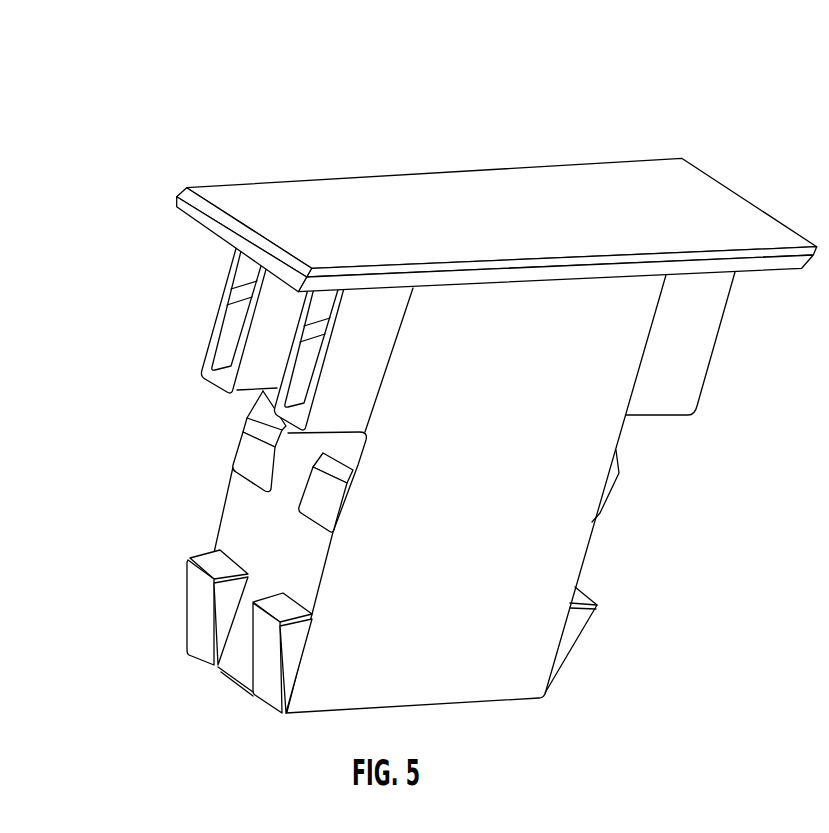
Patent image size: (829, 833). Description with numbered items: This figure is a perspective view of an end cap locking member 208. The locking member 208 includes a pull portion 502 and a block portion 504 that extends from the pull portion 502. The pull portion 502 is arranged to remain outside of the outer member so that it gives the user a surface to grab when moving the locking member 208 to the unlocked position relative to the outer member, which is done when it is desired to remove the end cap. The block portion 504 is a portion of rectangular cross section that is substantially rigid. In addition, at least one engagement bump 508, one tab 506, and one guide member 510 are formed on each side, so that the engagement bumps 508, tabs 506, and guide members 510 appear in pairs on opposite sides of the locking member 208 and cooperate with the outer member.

The locking member 208 is at (645, 62).
The pull portion 502 is at (435, 207).
The block portion 504 is at (490, 521).
The tab 506 is at (207, 556).
The engagement bump 508 is at (247, 450).
The guide member 510 is at (222, 302).